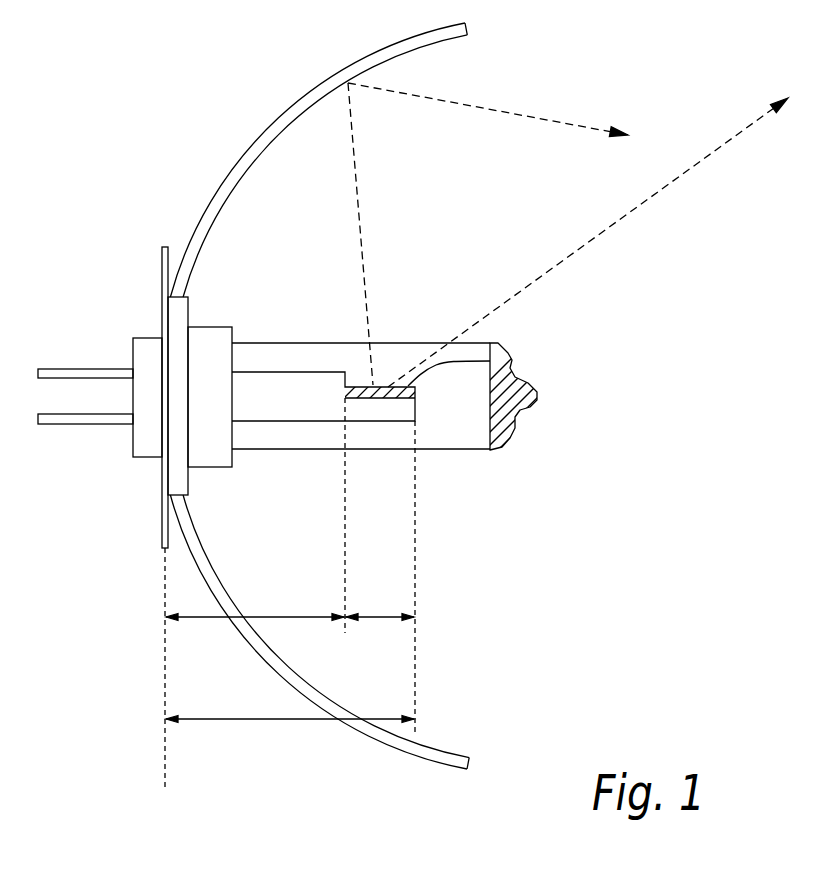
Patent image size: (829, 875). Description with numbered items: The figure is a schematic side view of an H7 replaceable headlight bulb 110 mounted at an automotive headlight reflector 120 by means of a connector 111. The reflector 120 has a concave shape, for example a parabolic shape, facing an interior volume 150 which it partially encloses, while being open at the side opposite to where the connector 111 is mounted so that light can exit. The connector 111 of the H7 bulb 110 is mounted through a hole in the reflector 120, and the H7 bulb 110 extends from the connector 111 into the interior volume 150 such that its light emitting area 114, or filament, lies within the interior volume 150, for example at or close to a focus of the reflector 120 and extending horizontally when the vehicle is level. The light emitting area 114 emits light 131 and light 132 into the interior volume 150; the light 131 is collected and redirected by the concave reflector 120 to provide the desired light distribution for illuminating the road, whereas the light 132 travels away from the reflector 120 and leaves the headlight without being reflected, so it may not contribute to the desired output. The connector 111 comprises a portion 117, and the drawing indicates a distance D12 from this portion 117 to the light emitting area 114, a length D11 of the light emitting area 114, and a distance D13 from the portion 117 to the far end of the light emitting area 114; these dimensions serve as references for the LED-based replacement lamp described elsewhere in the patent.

The H7 replaceable headlight bulb 110 is at (382, 410).
The connector 111 is at (222, 495).
The light emitting area 114 is at (582, 388).
The portion of the connector 117 is at (162, 521).
The automotive headlight reflector 120 is at (270, 122).
The light 131 is at (488, 234).
The light 132 is at (588, 242).
The interior volume 150 is at (313, 267).
The length of the light emitting area D11 is at (380, 602).
The distance D12 is at (255, 602).
The distance D13 is at (290, 704).